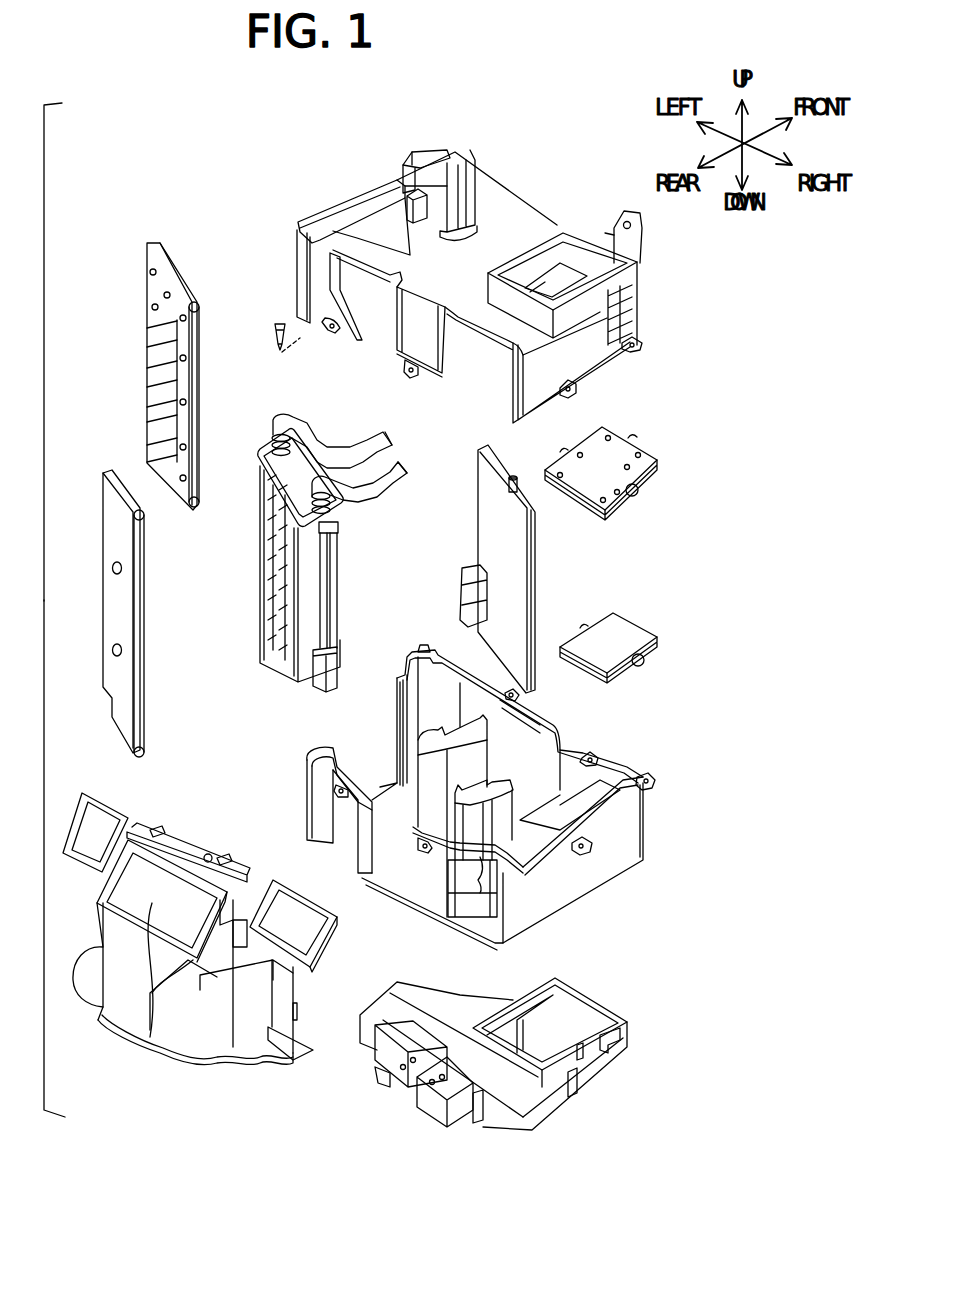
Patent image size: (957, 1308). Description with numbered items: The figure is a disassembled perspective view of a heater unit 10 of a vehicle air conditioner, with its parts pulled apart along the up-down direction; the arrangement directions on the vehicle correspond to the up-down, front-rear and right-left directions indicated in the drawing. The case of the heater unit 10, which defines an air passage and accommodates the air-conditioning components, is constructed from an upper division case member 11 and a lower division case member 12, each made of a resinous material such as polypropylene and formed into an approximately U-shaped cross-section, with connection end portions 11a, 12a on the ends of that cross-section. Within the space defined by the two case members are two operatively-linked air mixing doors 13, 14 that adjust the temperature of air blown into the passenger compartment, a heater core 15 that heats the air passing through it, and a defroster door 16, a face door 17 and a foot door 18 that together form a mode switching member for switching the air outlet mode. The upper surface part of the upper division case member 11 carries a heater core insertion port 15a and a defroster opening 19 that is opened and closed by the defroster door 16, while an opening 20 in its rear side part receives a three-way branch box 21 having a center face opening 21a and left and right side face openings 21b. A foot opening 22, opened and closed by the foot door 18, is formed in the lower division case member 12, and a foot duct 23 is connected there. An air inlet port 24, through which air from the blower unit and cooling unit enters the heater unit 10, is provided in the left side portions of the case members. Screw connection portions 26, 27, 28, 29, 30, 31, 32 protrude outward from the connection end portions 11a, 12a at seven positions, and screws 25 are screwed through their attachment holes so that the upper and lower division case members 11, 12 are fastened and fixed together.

The heater unit 10 is at (244, 219).
The upper division case member 11 is at (359, 180).
The connection end portion 11a is at (514, 424).
The lower division case member 12 is at (666, 834).
The connection end portion 12a is at (546, 720).
The air mixing door 13 is at (152, 241).
The air mixing door 14 is at (103, 556).
The heater core 15 is at (272, 568).
The heater core insertion port 15a is at (432, 168).
The defroster door 16 is at (575, 503).
The face door 17 is at (536, 585).
The foot door 18 is at (600, 682).
The defroster opening 19 is at (597, 262).
The opening 20 is at (465, 365).
The three-way branch box 21 is at (200, 1043).
The center face opening 21a is at (153, 905).
The side face opening 21b is at (98, 830).
The foot opening 22 is at (605, 788).
The foot duct 23 is at (522, 1083).
The air inlet port 24 is at (388, 780).
The screw 25 is at (279, 320).
The screw connection portion 26 is at (335, 330).
The screw connection portion 27 is at (408, 372).
The screw connection portion 28 is at (574, 391).
The screw connection portion 29 is at (640, 348).
The screw connection portion 30 is at (590, 758).
The screw connection portion 31 is at (515, 695).
The screw connection portion 32 is at (424, 648).